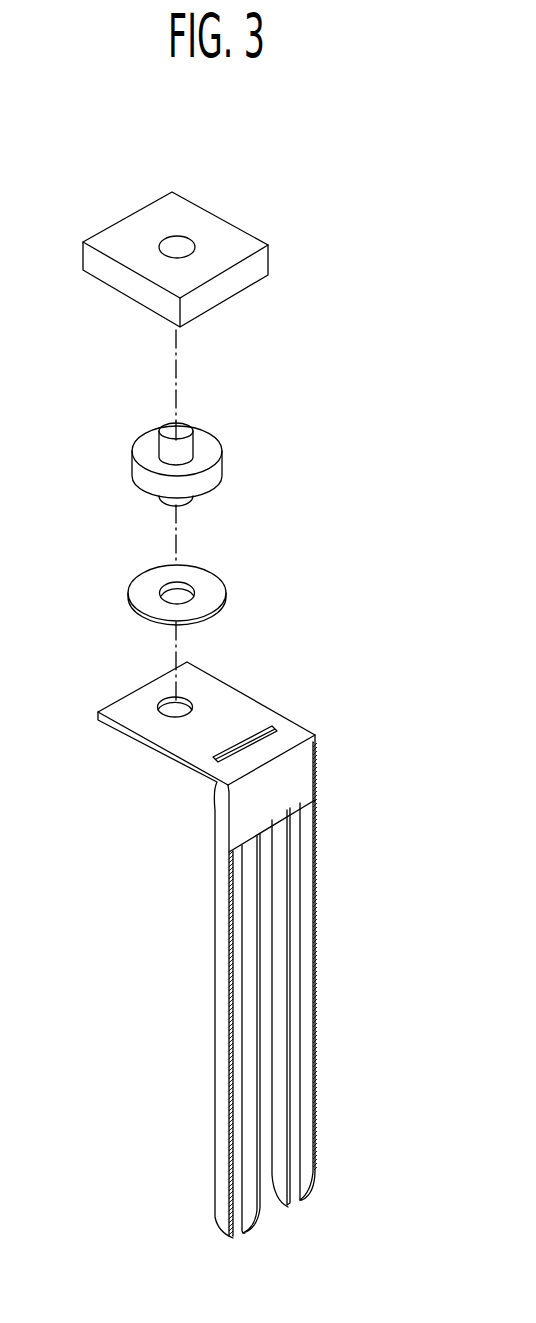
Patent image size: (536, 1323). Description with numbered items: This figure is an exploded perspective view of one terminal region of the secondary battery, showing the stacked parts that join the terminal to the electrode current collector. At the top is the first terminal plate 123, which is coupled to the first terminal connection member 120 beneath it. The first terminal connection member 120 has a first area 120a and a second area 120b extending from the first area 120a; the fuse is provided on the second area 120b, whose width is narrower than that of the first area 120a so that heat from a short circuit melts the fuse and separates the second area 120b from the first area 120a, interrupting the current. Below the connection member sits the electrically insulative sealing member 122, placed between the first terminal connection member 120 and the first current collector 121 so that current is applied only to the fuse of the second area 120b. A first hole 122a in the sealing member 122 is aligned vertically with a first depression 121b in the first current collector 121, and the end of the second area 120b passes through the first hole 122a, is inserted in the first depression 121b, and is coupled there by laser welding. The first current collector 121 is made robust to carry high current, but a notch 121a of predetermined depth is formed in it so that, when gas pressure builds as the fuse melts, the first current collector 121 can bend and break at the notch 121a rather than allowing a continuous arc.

The first terminal plate 123 is at (252, 268).
The first terminal connection member 120 is at (259, 469).
The first area 120a is at (182, 447).
The second area 120b is at (192, 503).
The sealing member 122 is at (235, 598).
The first hole 122a is at (190, 585).
The first current collector 121 is at (249, 946).
The notch 121a is at (253, 730).
The first depression 121b is at (187, 700).